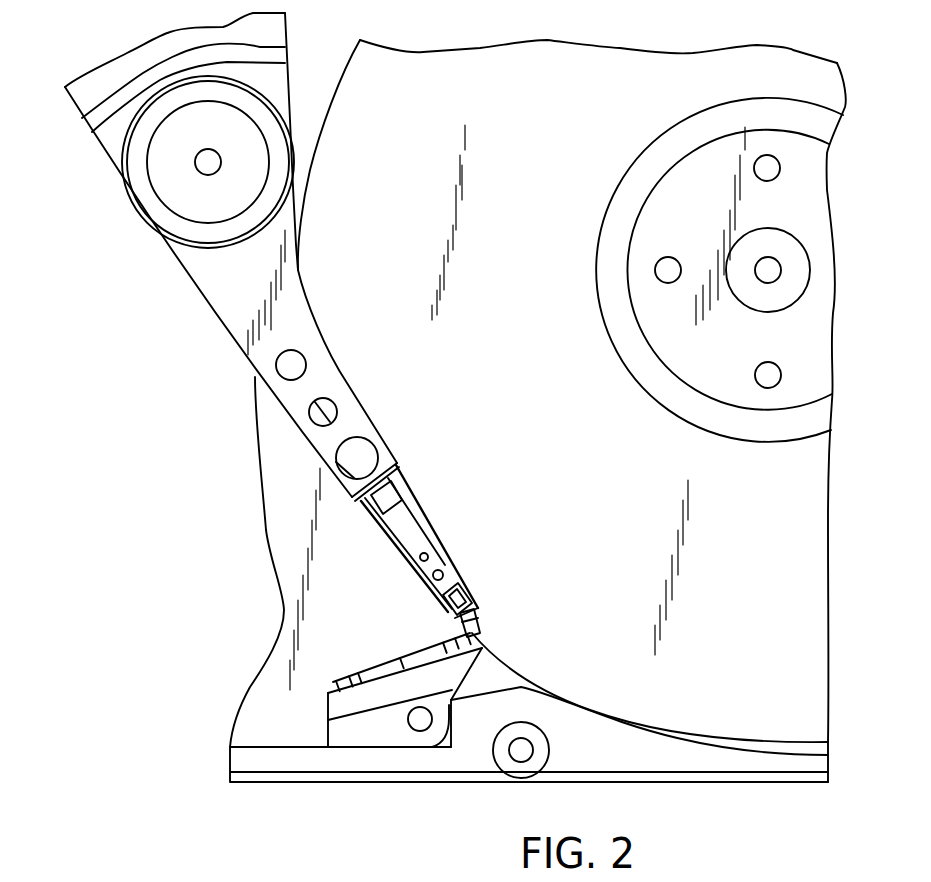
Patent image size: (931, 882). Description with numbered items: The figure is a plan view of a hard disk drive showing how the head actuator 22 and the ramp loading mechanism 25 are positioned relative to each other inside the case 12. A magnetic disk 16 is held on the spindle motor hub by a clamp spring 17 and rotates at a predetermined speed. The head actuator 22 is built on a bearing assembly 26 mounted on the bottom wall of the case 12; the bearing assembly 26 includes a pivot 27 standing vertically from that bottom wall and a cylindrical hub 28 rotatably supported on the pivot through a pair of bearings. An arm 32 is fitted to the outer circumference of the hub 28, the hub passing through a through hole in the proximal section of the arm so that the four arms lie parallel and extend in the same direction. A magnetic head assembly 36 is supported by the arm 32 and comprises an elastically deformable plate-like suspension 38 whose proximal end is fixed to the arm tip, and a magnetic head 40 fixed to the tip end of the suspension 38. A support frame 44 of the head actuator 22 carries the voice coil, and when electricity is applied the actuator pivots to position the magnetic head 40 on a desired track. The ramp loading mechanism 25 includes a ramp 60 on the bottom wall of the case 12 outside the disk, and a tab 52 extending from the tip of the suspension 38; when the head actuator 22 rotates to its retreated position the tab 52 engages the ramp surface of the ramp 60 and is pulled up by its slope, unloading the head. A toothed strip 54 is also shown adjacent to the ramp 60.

The case 12 is at (612, 738).
The magnetic disk 16 is at (822, 512).
The clamp spring 17 is at (660, 220).
The head actuator 22 is at (198, 366).
The ramp loading mechanism 25 is at (270, 674).
The bearing assembly 26 is at (151, 265).
The pivot 27 is at (195, 162).
The cylindrical hub 28 is at (150, 207).
The arm 32 is at (207, 283).
The magnetic head assembly 36 is at (421, 500).
The suspension 38 is at (450, 560).
The magnetic head 40 is at (463, 593).
The support frame 44 is at (278, 26).
The tab 52 is at (480, 626).
The toothed strip 54 is at (363, 678).
The ramp 60 is at (337, 706).